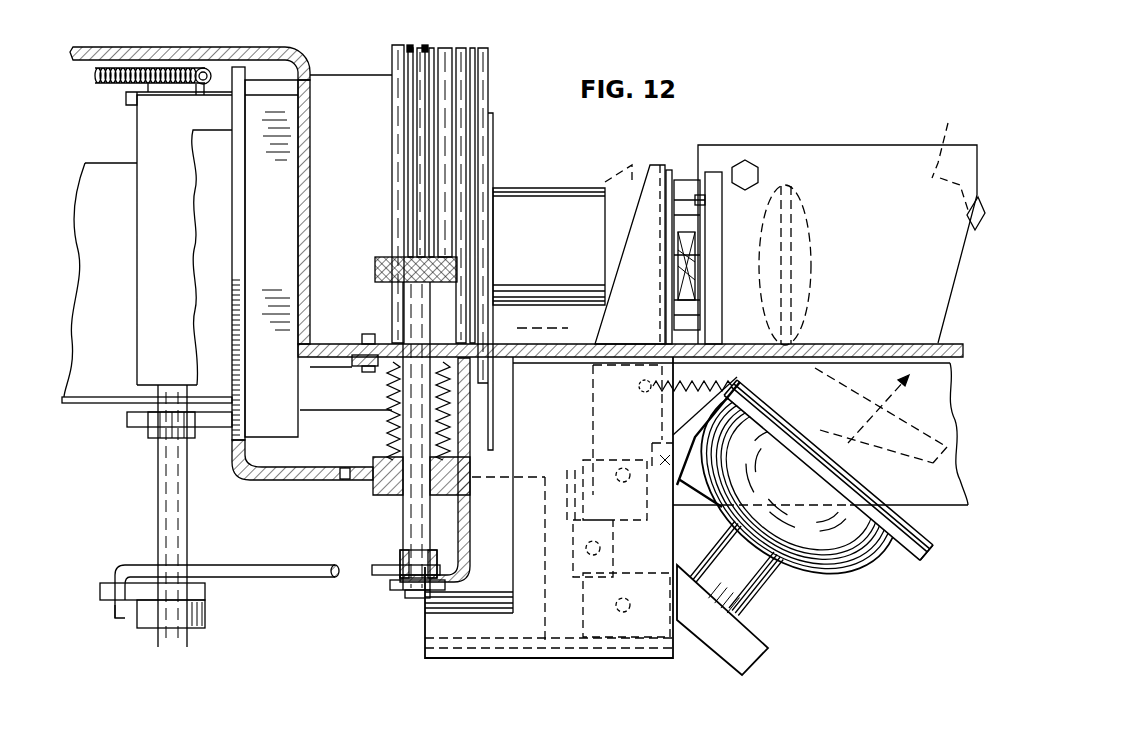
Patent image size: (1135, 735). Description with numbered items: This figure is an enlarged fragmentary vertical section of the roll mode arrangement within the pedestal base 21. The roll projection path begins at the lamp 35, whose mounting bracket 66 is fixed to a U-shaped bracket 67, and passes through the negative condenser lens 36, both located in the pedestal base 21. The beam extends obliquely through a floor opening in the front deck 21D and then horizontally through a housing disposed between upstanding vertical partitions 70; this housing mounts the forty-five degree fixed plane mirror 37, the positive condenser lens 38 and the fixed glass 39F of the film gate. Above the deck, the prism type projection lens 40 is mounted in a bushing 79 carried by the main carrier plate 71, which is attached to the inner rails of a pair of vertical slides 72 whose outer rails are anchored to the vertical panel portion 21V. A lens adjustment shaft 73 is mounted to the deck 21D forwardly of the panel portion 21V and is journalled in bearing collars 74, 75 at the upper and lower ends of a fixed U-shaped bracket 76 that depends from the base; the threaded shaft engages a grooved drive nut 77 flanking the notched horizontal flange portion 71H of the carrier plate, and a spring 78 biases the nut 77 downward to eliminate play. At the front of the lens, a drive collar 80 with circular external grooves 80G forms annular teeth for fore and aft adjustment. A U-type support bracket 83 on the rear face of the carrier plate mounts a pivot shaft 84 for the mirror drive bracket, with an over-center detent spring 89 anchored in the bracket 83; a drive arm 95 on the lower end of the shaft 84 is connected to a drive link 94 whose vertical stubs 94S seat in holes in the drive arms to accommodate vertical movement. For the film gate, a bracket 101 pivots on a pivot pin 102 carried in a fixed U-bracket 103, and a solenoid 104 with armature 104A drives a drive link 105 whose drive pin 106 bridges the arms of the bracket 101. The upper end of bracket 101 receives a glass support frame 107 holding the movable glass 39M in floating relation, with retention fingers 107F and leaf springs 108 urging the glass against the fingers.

The pedestal base 21 is at (132, 50).
The vertical panel portion 21V is at (307, 200).
The front deck 21D is at (582, 348).
The prism type projection lens 40 is at (352, 112).
The over-center detent spring 89 is at (106, 86).
The vertical slides 72 is at (277, 249).
The bushing 79 is at (238, 193).
The U-type support bracket 83 is at (214, 420).
The pivot shaft 84 is at (176, 485).
The main carrier plate 71 is at (248, 457).
The notched horizontal flange portion 71H is at (345, 474).
The drive collar 80 is at (488, 63).
The circular external grooves 80G is at (425, 46).
The lens adjustment shaft 73 is at (408, 313).
The bearing collar 74 is at (388, 372).
The spring 78 is at (392, 425).
The grooved drive nut 77 is at (462, 501).
The bearing collar 75 is at (404, 572).
The fixed U-shaped bracket 76 is at (468, 553).
The solenoid 104 is at (582, 662).
The pivot pin 102 is at (637, 665).
The armature 104A is at (523, 535).
The drive link 105 is at (633, 430).
The drive pin 106 is at (621, 548).
The drive link 94 is at (278, 580).
The drive arm 95 is at (113, 606).
The vertical stubs 94S is at (141, 628).
The vertical partitions 70 is at (853, 171).
The plane mirror 37 is at (953, 168).
The positive condenser lens 38 is at (808, 238).
The bracket 101 is at (652, 162).
The glass support frame 107 is at (668, 172).
The movable glass 39M is at (690, 226).
The leaf springs 108 is at (676, 284).
The retention fingers 107F is at (692, 228).
The fixed glass 39F is at (714, 180).
The negative condenser lens 36 is at (930, 472).
The U-shaped bracket 67 is at (717, 465).
The lamp 35 is at (862, 570).
The mounting bracket 66 is at (934, 558).
The fixed U-bracket 103 is at (661, 665).